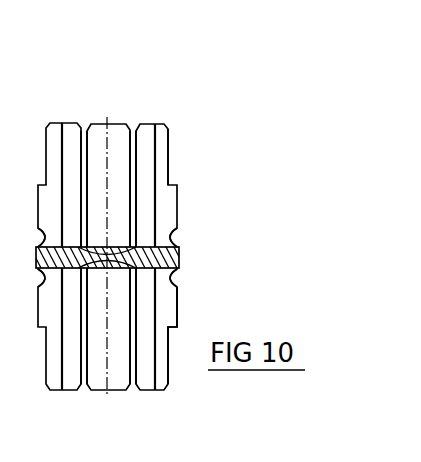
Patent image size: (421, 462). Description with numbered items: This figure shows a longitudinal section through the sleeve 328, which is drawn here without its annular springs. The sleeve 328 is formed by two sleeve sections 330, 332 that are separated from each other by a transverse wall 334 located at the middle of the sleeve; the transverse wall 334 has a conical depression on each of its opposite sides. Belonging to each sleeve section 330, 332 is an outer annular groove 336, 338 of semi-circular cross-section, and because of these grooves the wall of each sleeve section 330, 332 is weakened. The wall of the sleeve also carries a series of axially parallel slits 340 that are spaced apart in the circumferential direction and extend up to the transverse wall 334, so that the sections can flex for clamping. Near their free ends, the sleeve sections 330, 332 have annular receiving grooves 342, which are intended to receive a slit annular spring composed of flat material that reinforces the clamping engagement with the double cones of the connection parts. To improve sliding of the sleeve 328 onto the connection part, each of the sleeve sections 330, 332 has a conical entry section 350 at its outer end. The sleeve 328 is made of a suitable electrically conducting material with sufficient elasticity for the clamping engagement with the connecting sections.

The sleeve 328 is at (174, 256).
The sleeve section 330 is at (172, 201).
The sleeve section 332 is at (173, 306).
The transverse wall 334 is at (171, 248).
The outer annular groove 336 is at (171, 239).
The outer annular groove 338 is at (171, 275).
The axially parallel slit 340 is at (133, 140).
The annular receiving groove 342 is at (172, 142).
The conical entry section 350 is at (120, 126).